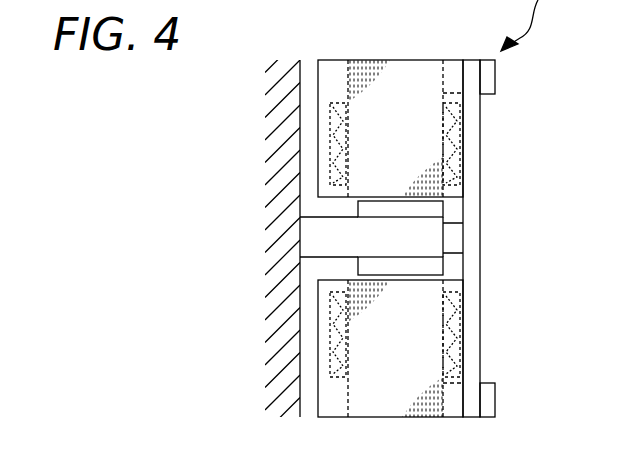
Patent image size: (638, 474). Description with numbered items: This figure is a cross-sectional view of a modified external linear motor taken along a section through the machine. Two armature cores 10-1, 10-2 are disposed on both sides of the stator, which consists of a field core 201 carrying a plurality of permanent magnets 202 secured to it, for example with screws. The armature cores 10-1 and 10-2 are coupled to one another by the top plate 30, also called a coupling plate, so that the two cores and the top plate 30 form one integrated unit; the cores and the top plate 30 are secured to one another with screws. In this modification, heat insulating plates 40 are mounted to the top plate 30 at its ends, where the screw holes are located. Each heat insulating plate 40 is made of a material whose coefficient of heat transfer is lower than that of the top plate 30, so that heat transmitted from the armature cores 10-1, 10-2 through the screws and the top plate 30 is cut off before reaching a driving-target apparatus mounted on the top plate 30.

The armature core 10-1 is at (412, 68).
The armature core 10-2 is at (370, 410).
The top plate 30 is at (472, 133).
The heat insulating plate 40 is at (491, 84).
The permanent magnet 202 is at (432, 212).
The field core 201 is at (338, 255).